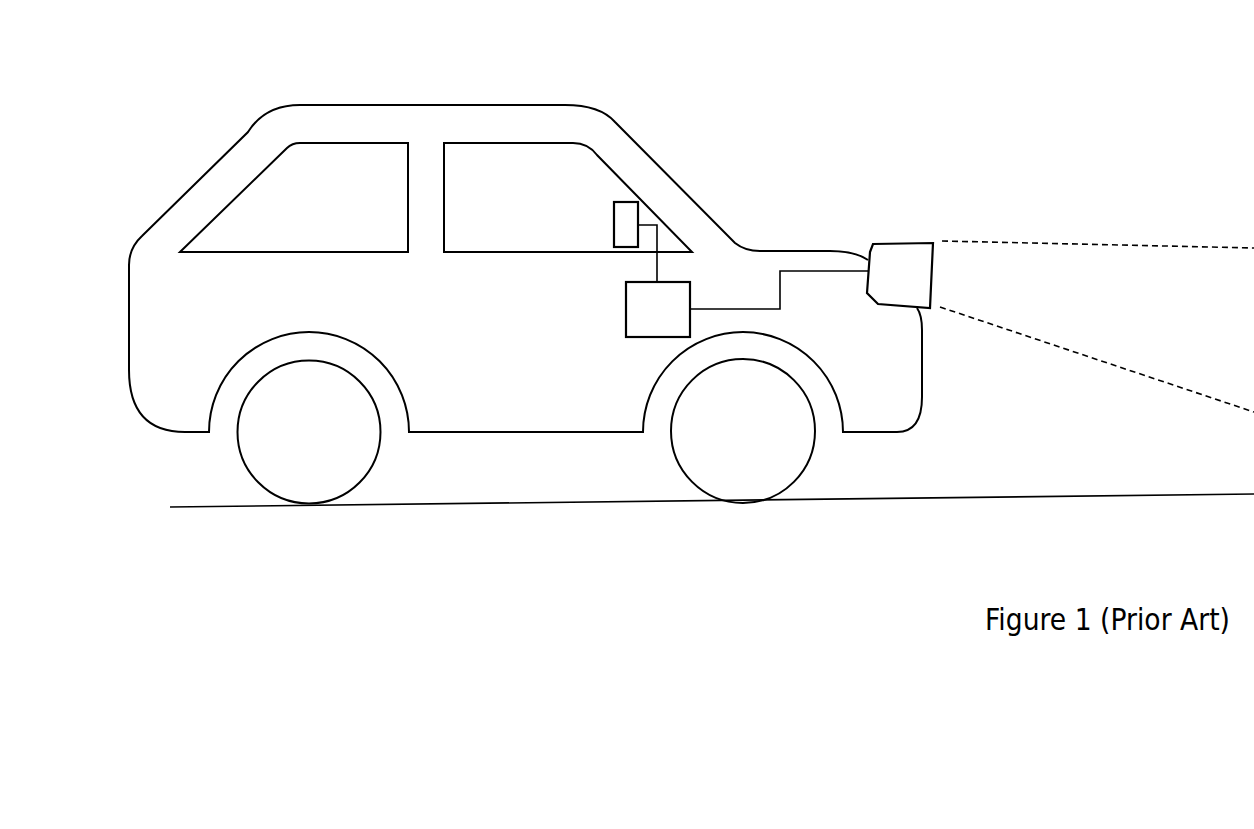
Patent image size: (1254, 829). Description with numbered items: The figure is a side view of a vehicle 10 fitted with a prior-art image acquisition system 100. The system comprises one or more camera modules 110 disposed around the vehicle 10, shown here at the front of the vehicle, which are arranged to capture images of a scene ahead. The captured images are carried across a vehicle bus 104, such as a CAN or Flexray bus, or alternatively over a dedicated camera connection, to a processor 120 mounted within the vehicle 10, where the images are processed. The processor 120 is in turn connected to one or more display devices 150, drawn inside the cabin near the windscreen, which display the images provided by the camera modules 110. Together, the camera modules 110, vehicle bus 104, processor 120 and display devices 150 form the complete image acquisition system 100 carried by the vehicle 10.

The vehicle 10 is at (316, 127).
The image acquisition system 100 is at (734, 194).
The vehicle bus 104 is at (808, 271).
The camera module 110 is at (885, 245).
The processor 120 is at (645, 318).
The display device 150 is at (630, 213).